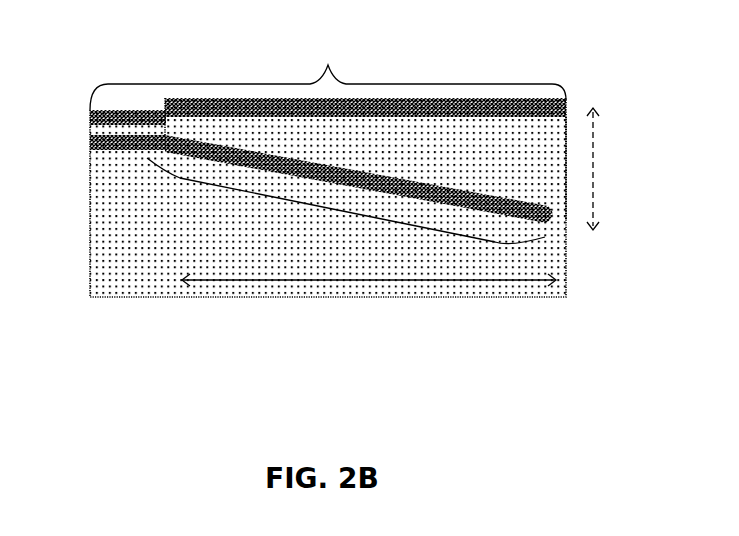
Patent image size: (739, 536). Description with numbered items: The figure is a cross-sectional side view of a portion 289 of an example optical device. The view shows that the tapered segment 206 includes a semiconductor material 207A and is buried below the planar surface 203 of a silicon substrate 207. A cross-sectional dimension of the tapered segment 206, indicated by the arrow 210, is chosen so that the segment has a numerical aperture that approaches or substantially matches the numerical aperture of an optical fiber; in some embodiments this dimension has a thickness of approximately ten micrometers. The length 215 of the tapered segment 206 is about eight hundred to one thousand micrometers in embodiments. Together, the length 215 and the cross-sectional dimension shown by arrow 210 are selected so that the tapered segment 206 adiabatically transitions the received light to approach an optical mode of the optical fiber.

The planar surface 203 is at (418, 84).
The tapered segment 206 is at (345, 212).
The silicon substrate 207 is at (118, 193).
The semiconductor material 207A is at (280, 132).
The arrow 210 is at (593, 148).
The length 215 is at (343, 282).
The portion 289 is at (518, 71).